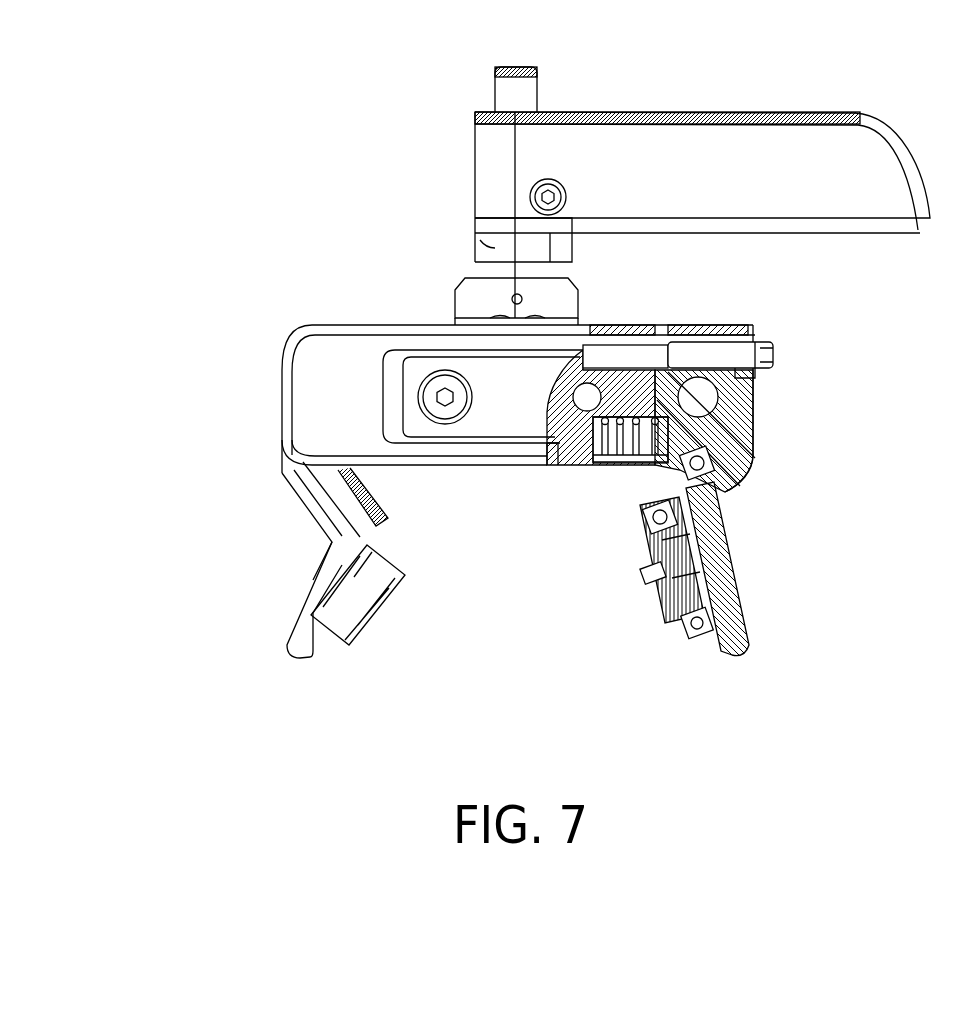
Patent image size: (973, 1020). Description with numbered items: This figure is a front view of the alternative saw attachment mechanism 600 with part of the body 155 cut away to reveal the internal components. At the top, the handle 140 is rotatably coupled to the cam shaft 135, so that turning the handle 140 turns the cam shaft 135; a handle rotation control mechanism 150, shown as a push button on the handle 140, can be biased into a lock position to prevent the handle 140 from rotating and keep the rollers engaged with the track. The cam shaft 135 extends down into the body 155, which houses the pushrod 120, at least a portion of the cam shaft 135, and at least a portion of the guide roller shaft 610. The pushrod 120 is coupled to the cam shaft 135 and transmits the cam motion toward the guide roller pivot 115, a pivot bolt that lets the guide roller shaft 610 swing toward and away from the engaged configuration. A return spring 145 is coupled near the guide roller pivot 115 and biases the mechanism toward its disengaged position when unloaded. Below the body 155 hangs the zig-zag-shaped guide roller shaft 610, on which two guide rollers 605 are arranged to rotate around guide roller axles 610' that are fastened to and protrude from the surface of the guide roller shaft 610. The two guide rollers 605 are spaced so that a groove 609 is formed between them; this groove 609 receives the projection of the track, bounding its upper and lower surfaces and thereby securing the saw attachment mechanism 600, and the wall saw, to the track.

The saw attachment mechanism 600 is at (226, 122).
The handle 140 is at (474, 165).
The handle rotation control mechanism 150 is at (540, 93).
The cam shaft 135 is at (473, 278).
The body 155 is at (283, 350).
The return spring 145 is at (598, 467).
The pushrod 120 is at (703, 325).
The guide roller pivot 115 is at (750, 425).
The guide roller shaft 610 is at (516, 571).
The guide roller axle 610' is at (654, 585).
The guide roller 605 is at (738, 487).
The groove 609 is at (378, 548).